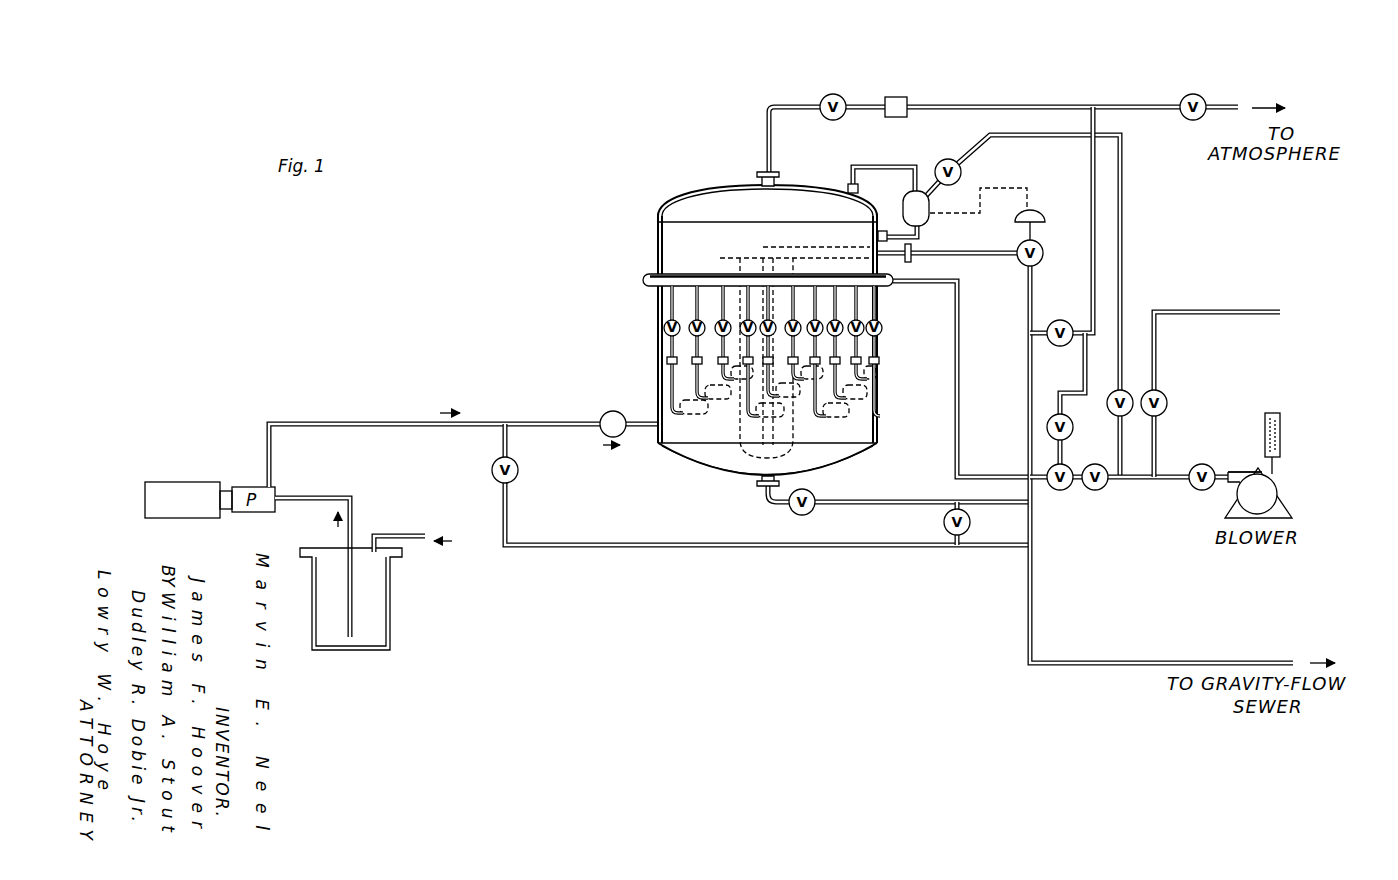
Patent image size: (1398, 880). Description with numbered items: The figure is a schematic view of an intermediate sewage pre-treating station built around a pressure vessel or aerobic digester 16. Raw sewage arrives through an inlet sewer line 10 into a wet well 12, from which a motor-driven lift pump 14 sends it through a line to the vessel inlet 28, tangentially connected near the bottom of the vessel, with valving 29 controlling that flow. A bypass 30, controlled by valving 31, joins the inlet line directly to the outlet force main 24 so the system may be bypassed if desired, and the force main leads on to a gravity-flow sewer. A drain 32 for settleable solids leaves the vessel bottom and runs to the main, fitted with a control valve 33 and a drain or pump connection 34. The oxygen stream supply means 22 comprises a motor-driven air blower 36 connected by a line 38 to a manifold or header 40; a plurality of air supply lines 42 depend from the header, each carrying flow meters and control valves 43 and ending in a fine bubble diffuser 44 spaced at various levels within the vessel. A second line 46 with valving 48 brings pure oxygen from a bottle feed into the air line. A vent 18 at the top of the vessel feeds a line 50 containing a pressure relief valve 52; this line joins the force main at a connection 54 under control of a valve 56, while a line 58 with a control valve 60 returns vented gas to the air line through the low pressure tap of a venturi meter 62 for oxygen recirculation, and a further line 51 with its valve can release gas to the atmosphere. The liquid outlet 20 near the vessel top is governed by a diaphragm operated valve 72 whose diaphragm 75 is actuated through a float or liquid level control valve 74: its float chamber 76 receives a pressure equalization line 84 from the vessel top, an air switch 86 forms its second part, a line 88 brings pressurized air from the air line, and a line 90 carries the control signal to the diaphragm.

The inlet sewer line 10 is at (405, 535).
The wet well 12 is at (392, 601).
The motor-driven lift pump 14 is at (203, 479).
The pressure vessel or aerobic digester 16 is at (672, 198).
The vent 18 is at (757, 174).
The outlet 20 is at (918, 256).
The oxygen stream supply means 22 is at (1174, 470).
The outlet force main 24 is at (1028, 386).
The vessel inlet 28 is at (653, 430).
The valving 29 is at (604, 413).
The bypass 30 is at (623, 548).
The valving 31 is at (518, 476).
The drain 32 is at (912, 500).
The control valve 33 is at (789, 506).
The drain or pump connection 34 is at (944, 522).
The motor-driven air blower 36 is at (1262, 491).
The line 38 is at (957, 360).
The manifold or header 40 is at (643, 279).
The air supply lines 42 is at (668, 357).
The flow meters and control valves 43 is at (666, 322).
The fine bubble diffuser 44 is at (778, 352).
The second line 46 is at (1232, 312).
The valving 48 is at (1168, 401).
The line 50 is at (990, 105).
The line 51 is at (1149, 105).
The pressure relief valve 52 is at (833, 93).
The connection 54 is at (1028, 333).
The valve 56 is at (1062, 318).
The line 58 is at (1084, 371).
The control valve 60 is at (1046, 431).
The venturi meter 62 is at (1070, 489).
The diaphragm operated valve 72 is at (1044, 252).
The float or liquid level control valve 74 is at (901, 205).
The diaphragm 75 is at (1039, 212).
The float chamber 76 is at (925, 222).
The pressure equalization line 84 is at (875, 166).
The air switch 86 is at (936, 166).
The line 88 is at (1125, 237).
The line 90 is at (990, 188).